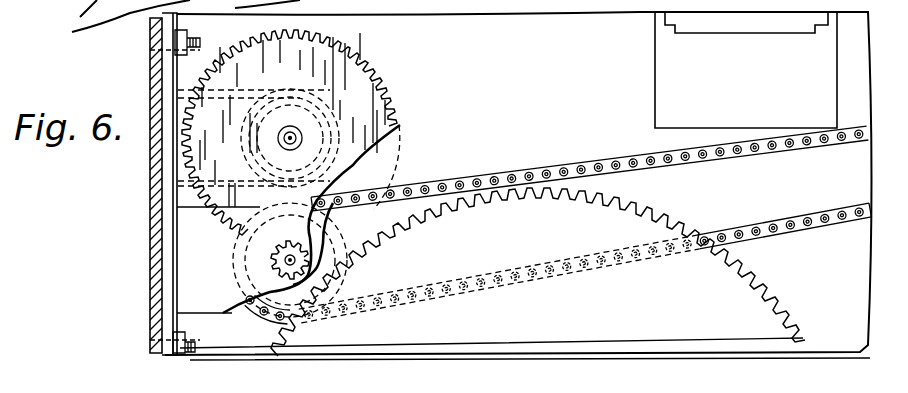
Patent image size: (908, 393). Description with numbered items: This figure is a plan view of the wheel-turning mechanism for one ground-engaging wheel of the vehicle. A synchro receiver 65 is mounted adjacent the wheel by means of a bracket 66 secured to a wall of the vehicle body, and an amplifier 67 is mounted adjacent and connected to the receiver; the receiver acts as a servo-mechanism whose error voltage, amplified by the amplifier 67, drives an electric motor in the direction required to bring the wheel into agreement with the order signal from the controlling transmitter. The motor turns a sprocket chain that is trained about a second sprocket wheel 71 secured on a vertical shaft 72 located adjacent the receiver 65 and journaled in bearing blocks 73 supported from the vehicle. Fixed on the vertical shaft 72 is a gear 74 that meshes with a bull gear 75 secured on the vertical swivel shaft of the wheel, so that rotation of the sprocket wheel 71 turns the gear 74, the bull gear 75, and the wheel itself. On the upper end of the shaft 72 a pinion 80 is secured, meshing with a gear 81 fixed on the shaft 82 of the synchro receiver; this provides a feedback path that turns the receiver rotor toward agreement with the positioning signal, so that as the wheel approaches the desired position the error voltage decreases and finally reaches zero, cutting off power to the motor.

The bracket 66 is at (212, 90).
The synchro receiver 65 is at (290, 105).
The gear 81 is at (368, 121).
The shaft of the synchro receiver 82 is at (297, 138).
The second sprocket wheel 71 is at (560, 170).
The vertical shaft 72 is at (400, 232).
The bull gear 75 is at (622, 230).
The amplifier 67 is at (672, 90).
The pinion 80 is at (262, 262).
The bearing blocks 73 is at (212, 302).
The gear 74 is at (265, 292).